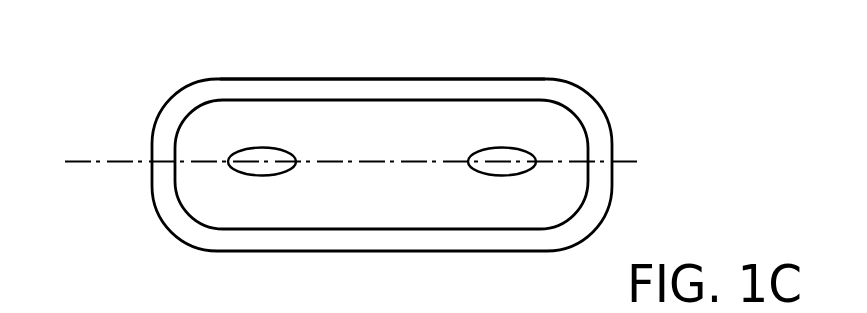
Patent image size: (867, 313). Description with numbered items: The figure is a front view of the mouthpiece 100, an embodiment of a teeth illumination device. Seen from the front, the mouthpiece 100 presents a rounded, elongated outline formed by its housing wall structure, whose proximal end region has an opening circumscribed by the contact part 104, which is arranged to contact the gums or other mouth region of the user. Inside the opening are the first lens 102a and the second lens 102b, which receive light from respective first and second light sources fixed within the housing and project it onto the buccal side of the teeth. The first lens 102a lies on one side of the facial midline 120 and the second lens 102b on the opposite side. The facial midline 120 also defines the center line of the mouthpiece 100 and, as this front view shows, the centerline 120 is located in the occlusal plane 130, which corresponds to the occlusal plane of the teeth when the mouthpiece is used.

The mouthpiece 100 is at (133, 96).
The facial midline 120 is at (386, 76).
The contact part 104 is at (598, 112).
The occlusal plane 130 is at (108, 163).
The first lens 102a is at (248, 176).
The second lens 102b is at (512, 176).